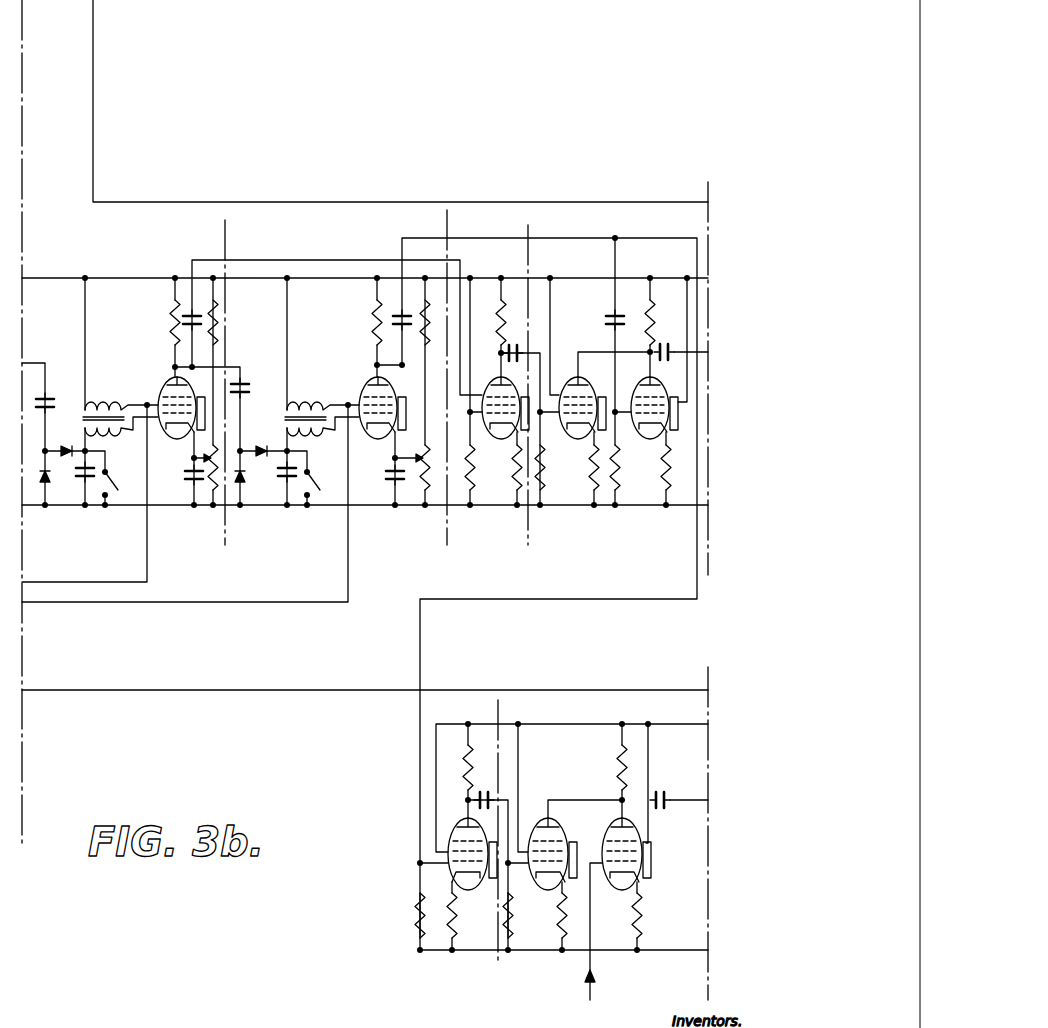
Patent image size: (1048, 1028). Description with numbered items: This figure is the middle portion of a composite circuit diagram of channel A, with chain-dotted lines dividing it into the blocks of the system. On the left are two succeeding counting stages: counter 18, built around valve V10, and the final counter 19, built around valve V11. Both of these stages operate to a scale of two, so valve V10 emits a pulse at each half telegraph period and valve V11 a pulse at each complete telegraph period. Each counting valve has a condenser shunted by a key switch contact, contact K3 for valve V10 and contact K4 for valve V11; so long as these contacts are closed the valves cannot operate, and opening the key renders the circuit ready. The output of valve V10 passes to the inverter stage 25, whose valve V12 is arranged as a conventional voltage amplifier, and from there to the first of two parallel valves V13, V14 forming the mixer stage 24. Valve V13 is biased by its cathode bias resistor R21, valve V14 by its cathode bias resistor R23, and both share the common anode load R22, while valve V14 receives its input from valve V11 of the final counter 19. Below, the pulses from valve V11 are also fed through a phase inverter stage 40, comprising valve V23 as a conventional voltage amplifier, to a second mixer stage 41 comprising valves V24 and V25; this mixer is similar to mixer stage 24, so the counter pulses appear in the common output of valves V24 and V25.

The counter stage 18 is at (135, 419).
The final counter stage 19 is at (336, 419).
The inverter stage 25 is at (493, 425).
The mixer stage 24 is at (618, 399).
The phase inverter stage 40 is at (461, 871).
The mixer stage 41 is at (603, 873).
The counting valve V10 is at (169, 381).
The counting valve V11 is at (367, 382).
The inverter valve V12 is at (505, 432).
The mixer valve V13 is at (569, 380).
The mixer valve V14 is at (650, 433).
The key switch contact K3 is at (117, 482).
The key switch contact K4 is at (319, 482).
The cathode bias resistor R21 is at (585, 474).
The anode load R22 is at (658, 315).
The cathode bias resistor R23 is at (663, 464).
The phase inverter valve V23 is at (481, 888).
The mixer valve V24 is at (548, 889).
The mixer valve V25 is at (624, 889).